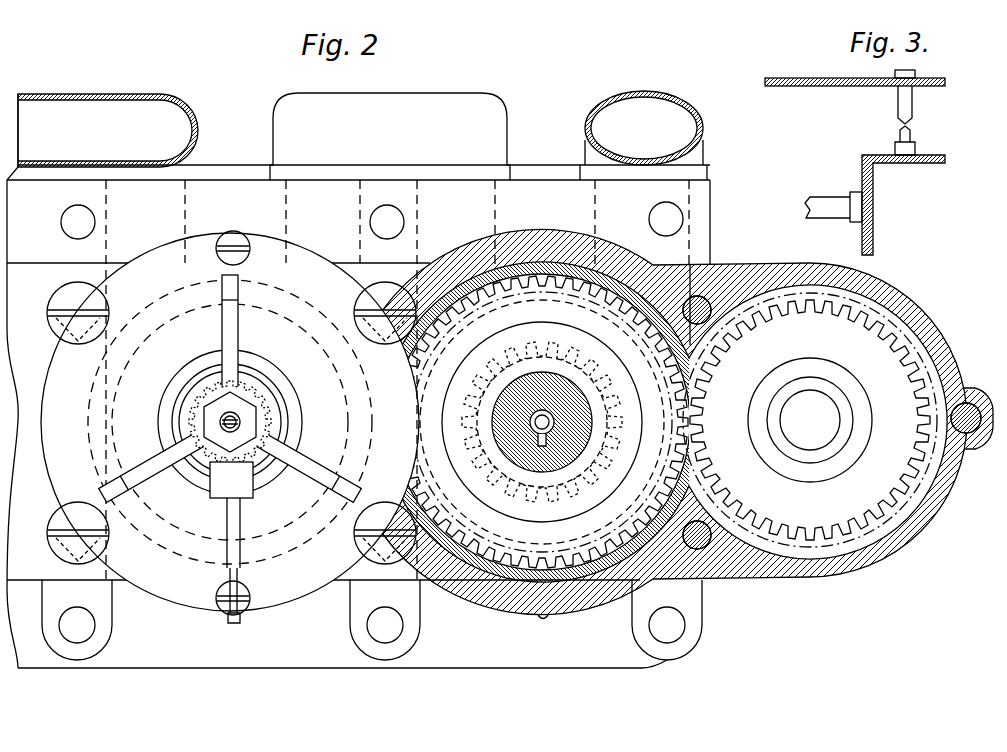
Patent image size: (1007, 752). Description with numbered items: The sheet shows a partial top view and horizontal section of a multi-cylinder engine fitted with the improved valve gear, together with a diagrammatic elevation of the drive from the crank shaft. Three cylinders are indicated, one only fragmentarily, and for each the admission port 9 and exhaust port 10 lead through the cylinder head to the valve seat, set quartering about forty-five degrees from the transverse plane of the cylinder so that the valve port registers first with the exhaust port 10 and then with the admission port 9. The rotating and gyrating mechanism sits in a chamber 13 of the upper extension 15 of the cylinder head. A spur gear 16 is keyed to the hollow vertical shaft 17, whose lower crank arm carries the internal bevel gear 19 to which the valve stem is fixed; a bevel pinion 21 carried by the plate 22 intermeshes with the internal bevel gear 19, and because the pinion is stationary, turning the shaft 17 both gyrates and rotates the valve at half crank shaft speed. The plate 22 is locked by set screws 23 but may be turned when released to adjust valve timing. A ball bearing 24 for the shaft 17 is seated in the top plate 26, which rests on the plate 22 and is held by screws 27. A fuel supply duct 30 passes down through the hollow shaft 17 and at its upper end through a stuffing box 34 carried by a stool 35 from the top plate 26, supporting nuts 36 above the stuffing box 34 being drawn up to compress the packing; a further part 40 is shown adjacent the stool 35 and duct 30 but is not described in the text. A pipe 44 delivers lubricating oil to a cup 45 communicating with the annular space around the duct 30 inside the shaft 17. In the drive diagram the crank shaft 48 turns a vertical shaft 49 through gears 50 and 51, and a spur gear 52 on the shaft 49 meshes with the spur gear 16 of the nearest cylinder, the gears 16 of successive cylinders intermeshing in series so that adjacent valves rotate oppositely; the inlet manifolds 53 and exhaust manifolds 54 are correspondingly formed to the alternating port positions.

In FIG. 2, the admission port 9 is at (160, 340).
In FIG. 2, the exhaust port 10 is at (490, 332).
In FIG. 2, the chamber 13 is at (740, 595).
In FIG. 2, the upper extension 15 is at (830, 408).
In FIG. 2, the spur gear 16 is at (618, 300).
In FIG. 3, the spur gear 16 is at (792, 78).
In FIG. 2, the vertical shaft 17 is at (542, 455).
In FIG. 2, the internal bevel gear 19 is at (793, 420).
In FIG. 2, the bevel pinion 21 is at (542, 422).
In FIG. 2, the plate 22 is at (167, 252).
In FIG. 2, the set screws 23 is at (243, 618).
In FIG. 2, the ball bearing 24 is at (185, 412).
In FIG. 2, the top plate 26 is at (224, 422).
In FIG. 2, the screws 27 is at (240, 232).
In FIG. 2, the fuel supply duct 30 is at (566, 400).
In FIG. 2, the stuffing box 34 is at (272, 422).
In FIG. 2, the stool 35 is at (240, 338).
In FIG. 2, the supporting nuts 36 is at (216, 427).
In FIG. 2, the slide block 40 is at (228, 525).
In FIG. 2, the pipe 44 is at (245, 605).
In FIG. 2, the cup 45 is at (268, 408).
In FIG. 3, the crank shaft 48 is at (822, 198).
In FIG. 2, the vertical shaft 49 is at (810, 420).
In FIG. 3, the vertical shaft 49 is at (908, 134).
In FIG. 3, the gear 50 is at (873, 200).
In FIG. 3, the gear 51 is at (946, 162).
In FIG. 2, the spur gear 52 is at (912, 325).
In FIG. 3, the spur gear 52 is at (938, 78).
In FIG. 2, the inlet manifold 53 is at (162, 100).
In FIG. 2, the exhaust manifold 54 is at (390, 136).